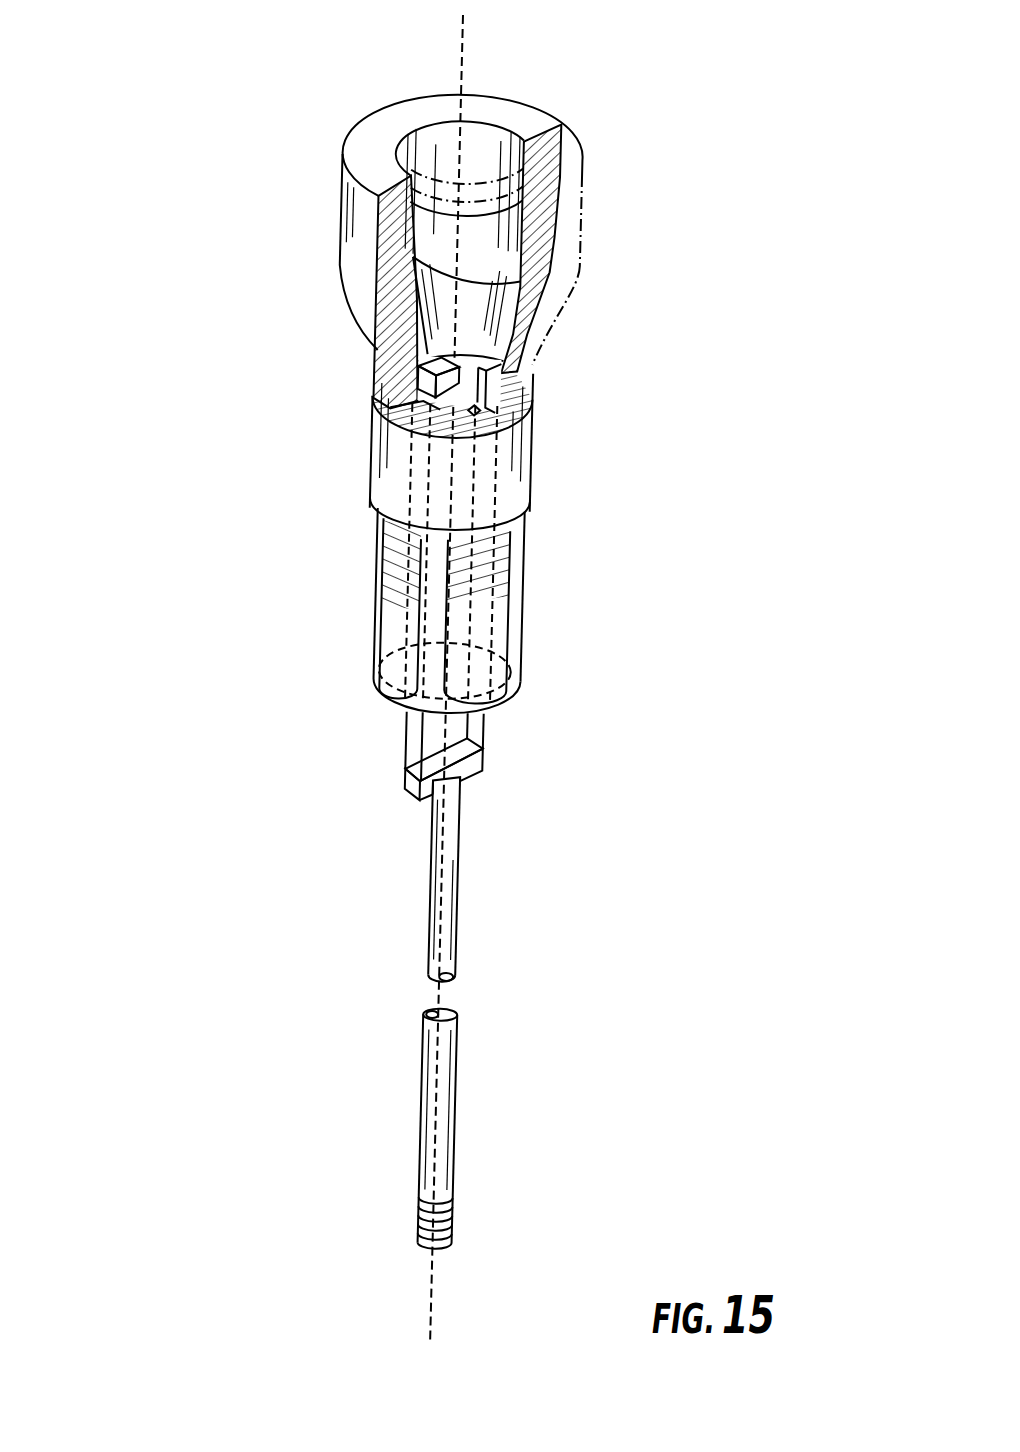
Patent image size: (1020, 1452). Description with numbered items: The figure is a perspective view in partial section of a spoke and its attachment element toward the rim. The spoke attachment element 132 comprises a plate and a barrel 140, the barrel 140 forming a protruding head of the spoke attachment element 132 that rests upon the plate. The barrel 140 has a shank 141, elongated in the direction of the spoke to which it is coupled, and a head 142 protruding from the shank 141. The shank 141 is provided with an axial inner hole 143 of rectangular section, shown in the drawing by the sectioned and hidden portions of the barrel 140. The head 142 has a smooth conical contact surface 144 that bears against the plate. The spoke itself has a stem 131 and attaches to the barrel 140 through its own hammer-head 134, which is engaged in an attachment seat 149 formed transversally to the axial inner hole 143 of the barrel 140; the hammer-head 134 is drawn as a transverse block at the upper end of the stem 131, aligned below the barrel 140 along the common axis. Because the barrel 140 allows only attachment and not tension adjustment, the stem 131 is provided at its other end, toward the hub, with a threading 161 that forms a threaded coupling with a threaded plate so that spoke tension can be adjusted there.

The stem 131 is at (458, 912).
The spoke attachment element 132 is at (305, 256).
The hammer-head 134 is at (407, 778).
The barrel 140 is at (542, 517).
The shank 141 is at (524, 442).
The head 142 is at (343, 147).
The axial inner hole 143 is at (495, 685).
The conical contact surface 144 is at (358, 296).
The attachment seat 149 is at (387, 360).
The threading 161 is at (454, 1217).